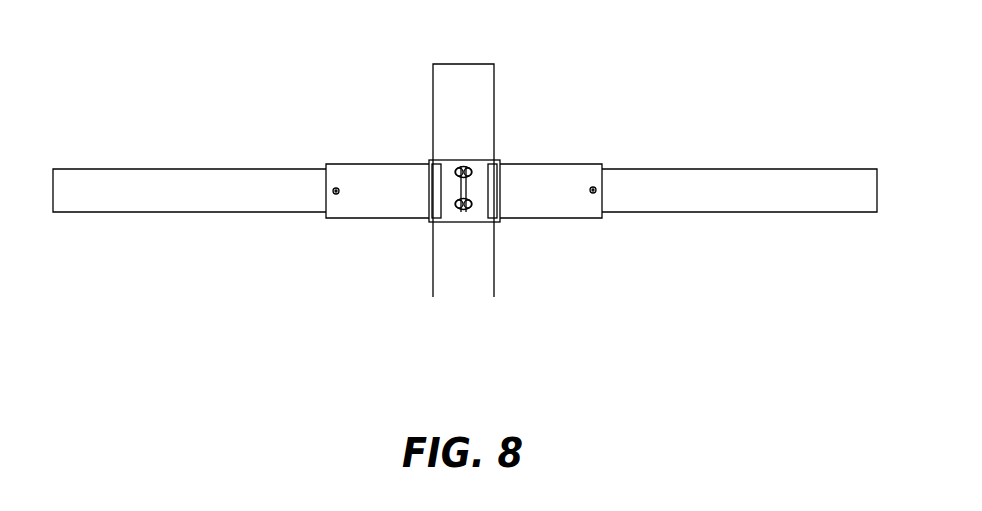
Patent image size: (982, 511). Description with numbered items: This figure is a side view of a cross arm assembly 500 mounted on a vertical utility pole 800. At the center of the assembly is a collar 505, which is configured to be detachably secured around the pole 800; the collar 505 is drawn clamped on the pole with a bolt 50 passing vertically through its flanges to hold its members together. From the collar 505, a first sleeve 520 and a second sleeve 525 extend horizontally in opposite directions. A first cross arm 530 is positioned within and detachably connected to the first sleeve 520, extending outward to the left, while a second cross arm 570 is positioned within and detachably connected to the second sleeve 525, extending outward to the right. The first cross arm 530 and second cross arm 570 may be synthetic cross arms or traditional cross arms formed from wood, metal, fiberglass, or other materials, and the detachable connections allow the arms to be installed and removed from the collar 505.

The cross arm assembly 500 is at (673, 101).
The vertical utility pole 800 is at (482, 117).
The collar 505 is at (448, 223).
The bolt 50 is at (437, 181).
The first sleeve 520 is at (357, 203).
The second sleeve 525 is at (571, 205).
The first cross arm 530 is at (213, 200).
The second cross arm 570 is at (735, 200).